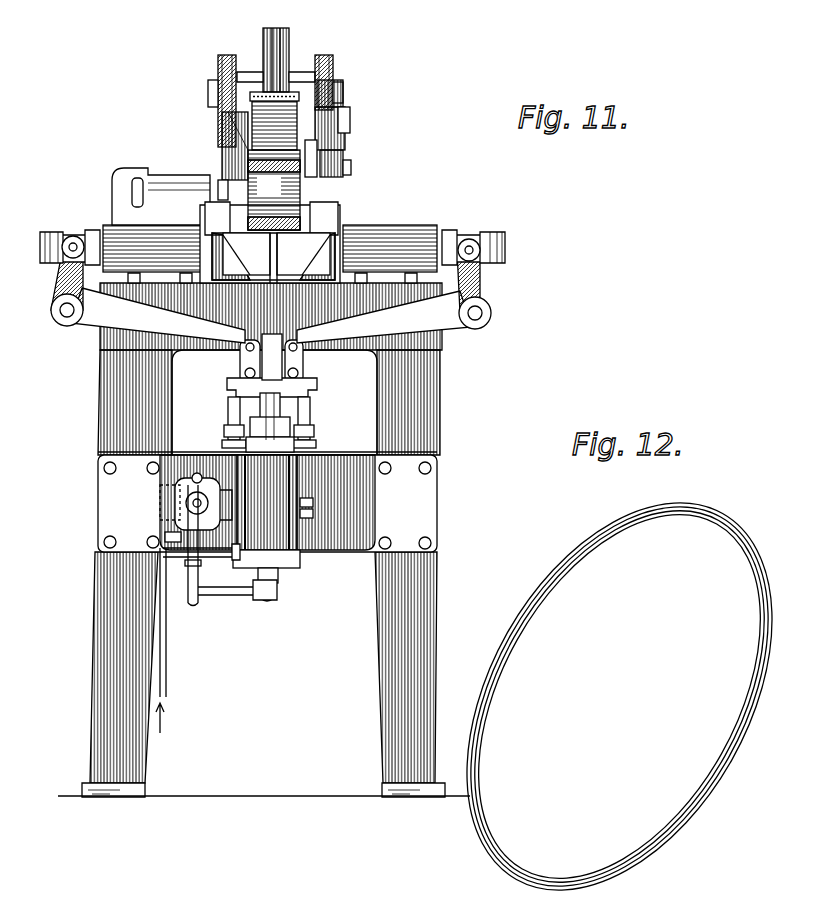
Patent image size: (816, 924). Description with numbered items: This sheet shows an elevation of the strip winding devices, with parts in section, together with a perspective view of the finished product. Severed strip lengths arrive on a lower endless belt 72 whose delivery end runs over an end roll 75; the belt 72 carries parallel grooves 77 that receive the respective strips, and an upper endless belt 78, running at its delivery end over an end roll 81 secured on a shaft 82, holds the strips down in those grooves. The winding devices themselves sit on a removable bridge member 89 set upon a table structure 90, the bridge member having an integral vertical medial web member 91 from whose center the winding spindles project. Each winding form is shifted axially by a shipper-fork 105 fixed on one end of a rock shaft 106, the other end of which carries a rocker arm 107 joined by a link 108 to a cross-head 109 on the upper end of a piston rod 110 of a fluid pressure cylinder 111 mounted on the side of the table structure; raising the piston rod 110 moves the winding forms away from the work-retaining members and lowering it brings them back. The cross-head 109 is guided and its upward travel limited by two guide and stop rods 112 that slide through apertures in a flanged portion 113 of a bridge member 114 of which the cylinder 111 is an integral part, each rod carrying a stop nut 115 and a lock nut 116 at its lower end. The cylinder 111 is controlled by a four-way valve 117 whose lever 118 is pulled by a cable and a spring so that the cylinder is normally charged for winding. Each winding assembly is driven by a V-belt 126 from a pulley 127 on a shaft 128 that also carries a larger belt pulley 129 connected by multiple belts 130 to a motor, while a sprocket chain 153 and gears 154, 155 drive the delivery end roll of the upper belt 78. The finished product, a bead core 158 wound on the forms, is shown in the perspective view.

In FIG. 11, the lower endless belt 72 is at (280, 165).
In FIG. 11, the end roll 75 is at (274, 190).
In FIG. 11, the parallel grooves 77 is at (215, 237).
In FIG. 11, the upper endless belt 78 is at (270, 98).
In FIG. 11, the end roll 81 is at (270, 120).
In FIG. 11, the shaft 82 is at (345, 120).
In FIG. 11, the bridge member 89 is at (246, 254).
In FIG. 11, the table structure 90 is at (430, 350).
In FIG. 11, the medial web member 91 is at (303, 254).
In FIG. 11, the shipper-fork 105 is at (65, 282).
In FIG. 11, the rock shaft 106 is at (67, 310).
In FIG. 11, the rocker arm 107 is at (128, 313).
In FIG. 11, the link 108 is at (245, 354).
In FIG. 11, the cross-head 109 is at (275, 381).
In FIG. 11, the piston rod 110 is at (280, 400).
In FIG. 11, the fluid pressure cylinder 111 is at (273, 537).
In FIG. 11, the guide and stop rods 112 is at (230, 410).
In FIG. 11, the flanged portion 113 is at (332, 455).
In FIG. 11, the bridge member 114 is at (407, 497).
In FIG. 11, the stop nut 115 is at (197, 477).
In FIG. 11, the lock nut 116 is at (173, 537).
In FIG. 11, the 4-way valve 117 is at (180, 507).
In FIG. 11, the valve lever 118 is at (195, 573).
In FIG. 11, the V-belt 126 is at (230, 55).
In FIG. 11, the pulley 127 is at (220, 63).
In FIG. 11, the shaft 128 is at (210, 90).
In FIG. 11, the belt pulley 129 is at (285, 50).
In FIG. 11, the belts 130 is at (275, 28).
In FIG. 11, the sprocket chain 153 is at (344, 175).
In FIG. 11, the gear 154 is at (330, 173).
In FIG. 11, the gear 155 is at (337, 107).
In FIG. 12, the bead core 158 is at (493, 707).